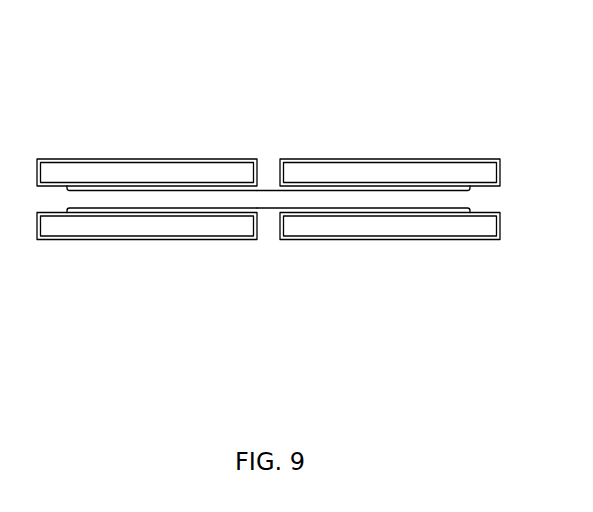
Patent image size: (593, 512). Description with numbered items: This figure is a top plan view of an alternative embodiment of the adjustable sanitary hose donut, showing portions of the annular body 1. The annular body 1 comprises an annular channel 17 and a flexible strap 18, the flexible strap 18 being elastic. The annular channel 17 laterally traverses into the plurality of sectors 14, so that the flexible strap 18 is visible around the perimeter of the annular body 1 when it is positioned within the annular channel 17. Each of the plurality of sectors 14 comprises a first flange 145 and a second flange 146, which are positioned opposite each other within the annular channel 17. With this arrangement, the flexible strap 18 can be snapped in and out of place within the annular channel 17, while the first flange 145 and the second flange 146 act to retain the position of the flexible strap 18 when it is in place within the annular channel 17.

The annular body 1 is at (283, 48).
The plurality of sectors 14 is at (130, 168).
The first flange 145 is at (183, 188).
The second flange 146 is at (122, 212).
The annular channel 17 is at (513, 201).
The flexible strap 18 is at (266, 207).